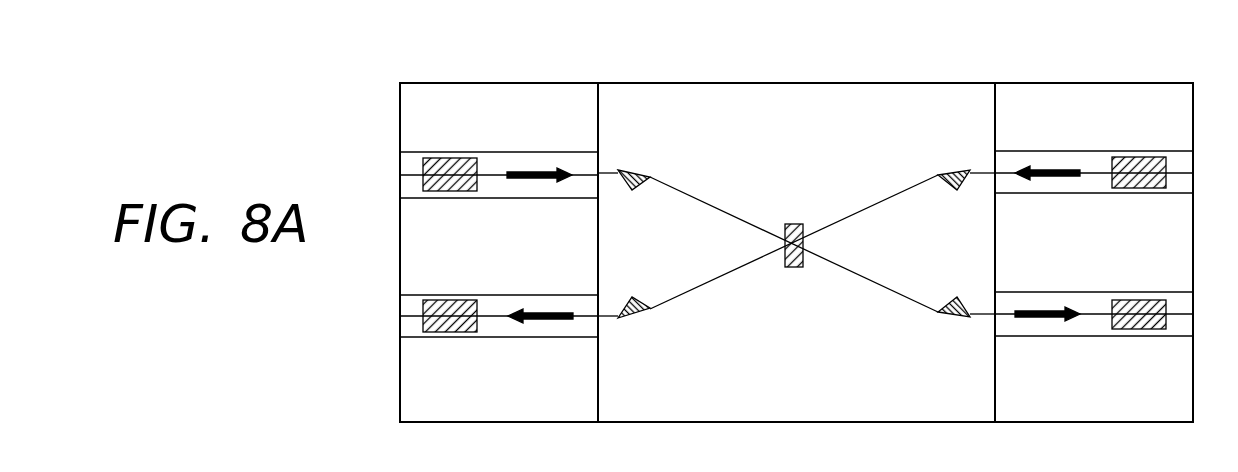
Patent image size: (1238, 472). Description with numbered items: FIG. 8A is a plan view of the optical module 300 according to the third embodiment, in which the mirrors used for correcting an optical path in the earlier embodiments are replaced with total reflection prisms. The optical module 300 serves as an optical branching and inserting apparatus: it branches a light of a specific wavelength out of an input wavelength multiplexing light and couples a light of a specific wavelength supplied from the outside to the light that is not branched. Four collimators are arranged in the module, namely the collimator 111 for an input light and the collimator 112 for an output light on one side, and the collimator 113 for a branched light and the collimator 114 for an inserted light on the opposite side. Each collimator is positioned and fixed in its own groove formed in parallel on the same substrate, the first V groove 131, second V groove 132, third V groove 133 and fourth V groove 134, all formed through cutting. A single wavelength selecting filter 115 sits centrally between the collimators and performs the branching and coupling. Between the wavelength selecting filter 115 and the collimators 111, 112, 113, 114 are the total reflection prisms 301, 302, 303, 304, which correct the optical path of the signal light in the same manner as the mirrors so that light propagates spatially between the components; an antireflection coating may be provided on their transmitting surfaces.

The optical module 300 is at (968, 81).
The collimator for an input light 111 is at (463, 158).
The collimator for an output light 112 is at (463, 300).
The collimator for a branched light 113 is at (1152, 300).
The collimator for an inserted light 114 is at (1152, 157).
The wavelength selecting filter 115 is at (794, 224).
The first V groove 131 is at (522, 198).
The second V groove 132 is at (522, 337).
The third V groove 133 is at (1048, 336).
The fourth V groove 134 is at (1048, 193).
The total reflection prism 301 is at (634, 170).
The total reflection prism 302 is at (634, 298).
The total reflection prism 303 is at (950, 298).
The total reflection prism 304 is at (954, 172).